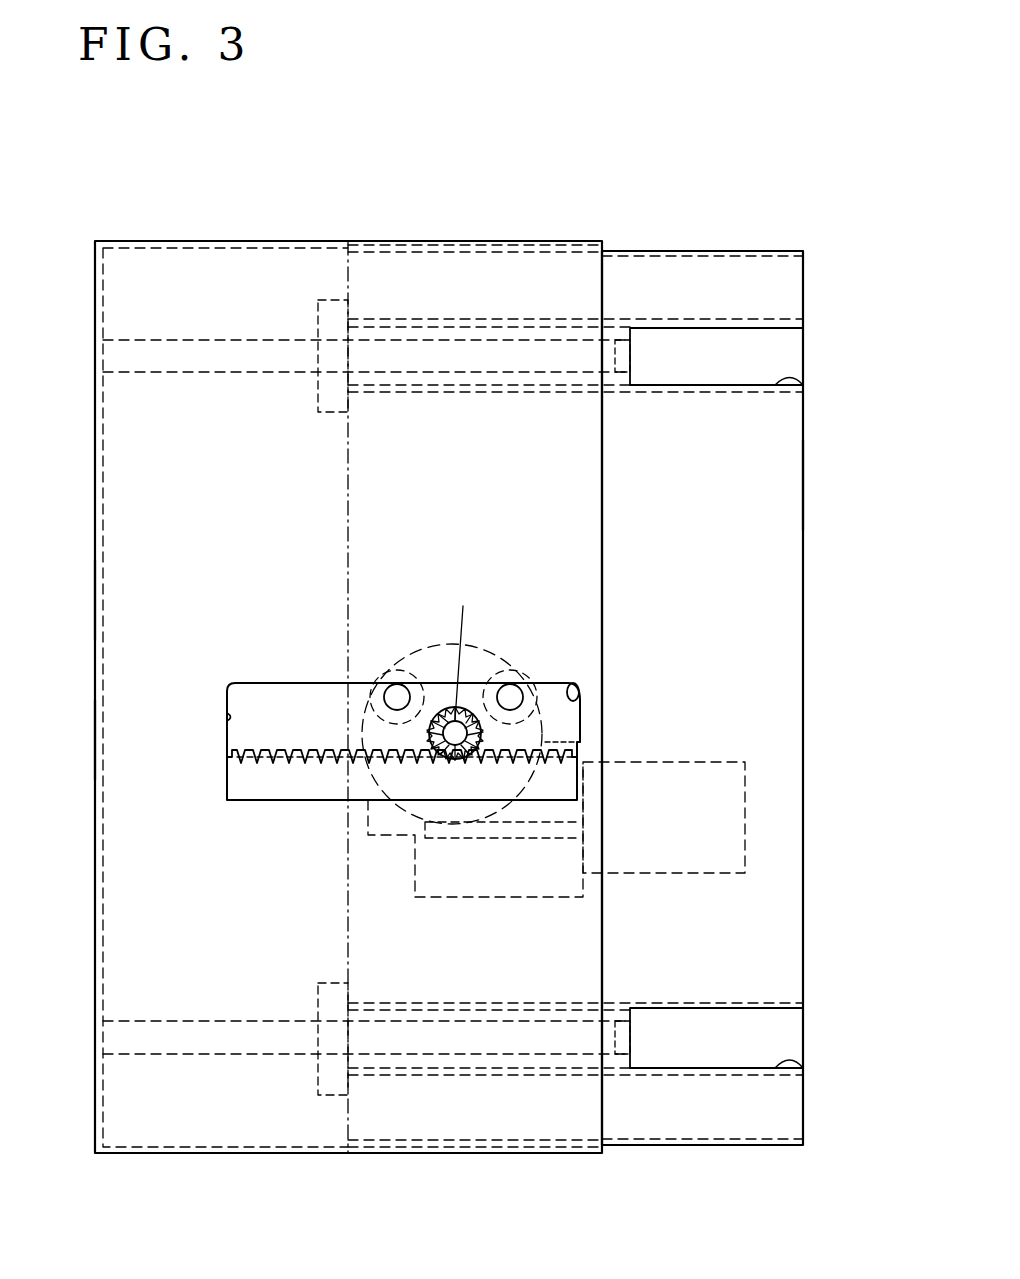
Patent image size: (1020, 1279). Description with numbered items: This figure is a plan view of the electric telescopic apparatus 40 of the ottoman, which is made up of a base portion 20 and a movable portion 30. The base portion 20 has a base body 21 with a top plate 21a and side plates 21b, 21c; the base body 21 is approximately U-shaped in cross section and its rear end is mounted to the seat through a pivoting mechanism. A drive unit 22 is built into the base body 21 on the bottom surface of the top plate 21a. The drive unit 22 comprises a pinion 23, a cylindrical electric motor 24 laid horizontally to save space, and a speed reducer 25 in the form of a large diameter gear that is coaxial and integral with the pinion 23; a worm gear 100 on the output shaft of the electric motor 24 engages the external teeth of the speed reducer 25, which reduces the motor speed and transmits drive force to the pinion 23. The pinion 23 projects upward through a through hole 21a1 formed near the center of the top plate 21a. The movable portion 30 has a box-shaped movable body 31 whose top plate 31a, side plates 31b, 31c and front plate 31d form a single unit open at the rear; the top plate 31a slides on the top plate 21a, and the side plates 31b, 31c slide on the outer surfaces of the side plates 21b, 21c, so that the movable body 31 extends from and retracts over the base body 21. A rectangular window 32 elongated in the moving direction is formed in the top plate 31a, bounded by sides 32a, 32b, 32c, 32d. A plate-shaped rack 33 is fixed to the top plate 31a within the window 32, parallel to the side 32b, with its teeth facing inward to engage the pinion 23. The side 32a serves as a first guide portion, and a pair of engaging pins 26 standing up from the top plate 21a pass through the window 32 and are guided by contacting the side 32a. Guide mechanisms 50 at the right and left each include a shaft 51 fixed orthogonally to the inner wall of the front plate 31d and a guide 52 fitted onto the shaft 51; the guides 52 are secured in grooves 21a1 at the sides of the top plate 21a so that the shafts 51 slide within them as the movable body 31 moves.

The base portion 20 is at (625, 240).
The base body 21 is at (805, 598).
The top plate 21a is at (790, 485).
The through hole 21a1 is at (795, 380).
The side plate 21b is at (703, 250).
The side plate 21c is at (676, 1150).
The drive unit 22 is at (537, 905).
The pinion 23 is at (485, 735).
The electric motor 24 is at (690, 762).
The speed reducer 25 is at (486, 650).
The engaging pins 26 is at (397, 690).
The movable portion 30 is at (312, 232).
The movable body 31 is at (90, 652).
The top plate 31a is at (118, 600).
The side plate 31b is at (220, 240).
The side plate 31c is at (247, 1158).
The front plate 31d is at (95, 733).
The window 32 is at (232, 686).
The side 32a is at (307, 686).
The side 32b is at (312, 762).
The side 32c is at (227, 718).
The side 32d is at (575, 683).
The rack 33 is at (226, 785).
The electric telescopic apparatus 40 is at (457, 224).
The guide mechanism 50 is at (300, 394).
The shaft 51 is at (236, 340).
The guide 52 is at (630, 357).
The worm gear 100 is at (488, 840).